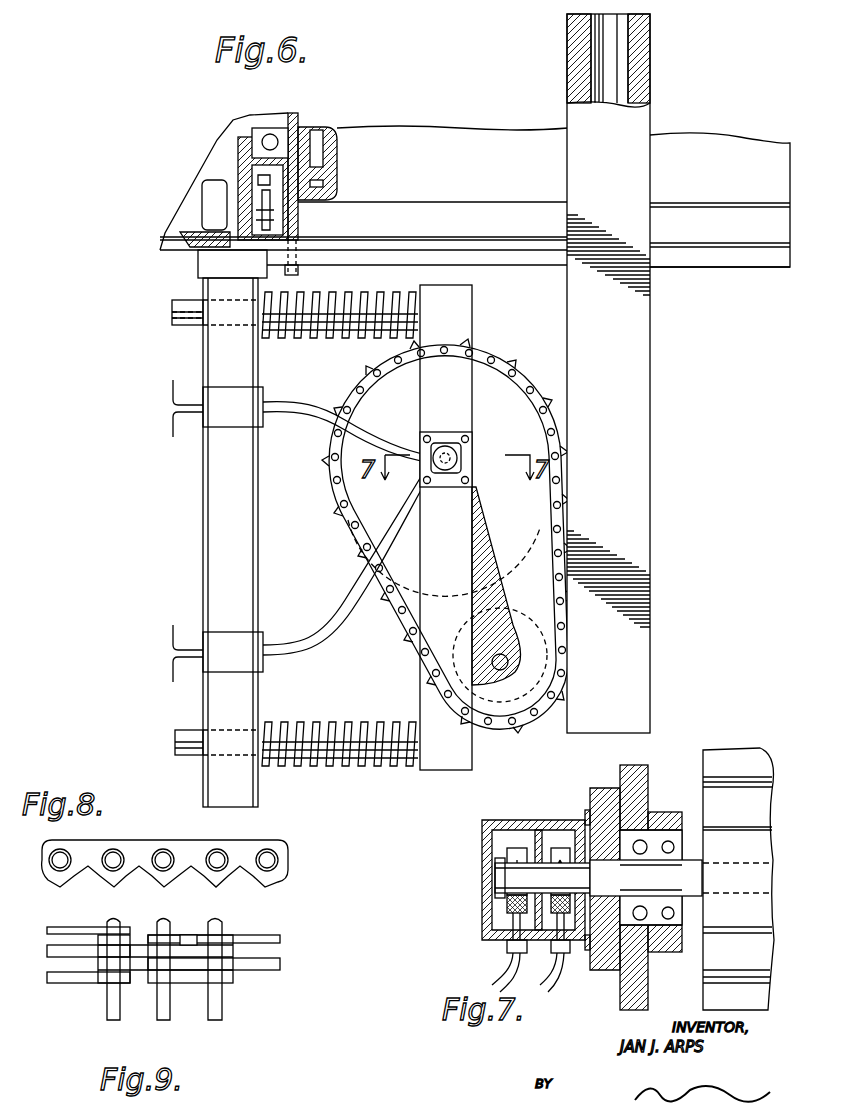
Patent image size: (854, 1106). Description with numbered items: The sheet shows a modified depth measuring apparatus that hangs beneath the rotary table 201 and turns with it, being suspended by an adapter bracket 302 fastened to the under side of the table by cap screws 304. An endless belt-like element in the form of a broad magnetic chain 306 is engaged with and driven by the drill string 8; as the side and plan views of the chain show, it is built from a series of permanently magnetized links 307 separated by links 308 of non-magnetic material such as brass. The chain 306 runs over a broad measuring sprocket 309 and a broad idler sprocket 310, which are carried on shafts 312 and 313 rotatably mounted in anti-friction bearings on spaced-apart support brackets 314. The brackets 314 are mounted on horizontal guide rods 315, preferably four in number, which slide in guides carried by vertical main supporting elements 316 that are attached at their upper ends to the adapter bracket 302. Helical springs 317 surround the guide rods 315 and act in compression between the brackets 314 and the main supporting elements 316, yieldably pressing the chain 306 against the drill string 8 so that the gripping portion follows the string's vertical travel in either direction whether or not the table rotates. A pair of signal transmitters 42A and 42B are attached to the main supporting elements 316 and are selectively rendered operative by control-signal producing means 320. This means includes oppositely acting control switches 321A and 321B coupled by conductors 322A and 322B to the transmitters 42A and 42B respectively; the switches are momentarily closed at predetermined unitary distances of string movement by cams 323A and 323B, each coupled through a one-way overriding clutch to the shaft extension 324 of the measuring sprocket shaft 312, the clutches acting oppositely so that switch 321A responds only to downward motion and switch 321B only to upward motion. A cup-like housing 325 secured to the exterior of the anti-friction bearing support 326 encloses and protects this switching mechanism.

In FIG. 6, the rotary table 201 is at (340, 160).
In FIG. 6, the cap screws 304 is at (298, 266).
In FIG. 6, the horizontal guide rods 315 is at (185, 733).
In FIG. 6, the vertical main supporting elements 316 is at (203, 352).
In FIG. 6, the helical springs 317 is at (328, 722).
In FIG. 6, the signal transmitter 42A is at (210, 410).
In FIG. 6, the signal transmitter 42B is at (210, 637).
In FIG. 6, the conductor 322A is at (305, 418).
In FIG. 7, the conductor 322A is at (558, 988).
In FIG. 6, the conductor 322B is at (300, 645).
In FIG. 7, the conductor 322B is at (500, 967).
In FIG. 6, the support brackets 314 is at (472, 308).
In FIG. 7, the support brackets 314 is at (648, 778).
In FIG. 6, the magnetic chain 306 is at (525, 355).
In FIG. 6, the control-signal producing means 320 is at (455, 432).
In FIG. 7, the control-signal producing means 320 is at (480, 820).
In FIG. 6, the measuring sprocket shaft 312 is at (457, 457).
In FIG. 7, the measuring sprocket shaft 312 is at (692, 940).
In FIG. 6, the drill string 8 is at (660, 472).
In FIG. 6, the adapter bracket 302 is at (672, 262).
In FIG. 6, the measuring sprocket 309 is at (505, 540).
In FIG. 7, the measuring sprocket 309 is at (750, 762).
In FIG. 6, the idler sprocket 310 is at (522, 620).
In FIG. 6, the idler sprocket shaft 313 is at (493, 660).
In FIG. 7, the anti-friction bearing support 326 is at (595, 800).
In FIG. 7, the cam 323A is at (557, 848).
In FIG. 7, the cam 323B is at (515, 848).
In FIG. 7, the cup-like housing 325 is at (482, 838).
In FIG. 7, the shaft extension 324 is at (495, 875).
In FIG. 7, the control switch 321A is at (565, 955).
In FIG. 7, the control switch 321B is at (507, 950).
In FIG. 8, the permanently magnetized links 307 is at (208, 880).
In FIG. 9, the permanently magnetized links 307 is at (195, 970).
In FIG. 8, the non-magnetic links 308 is at (138, 865).
In FIG. 9, the non-magnetic links 308 is at (140, 970).